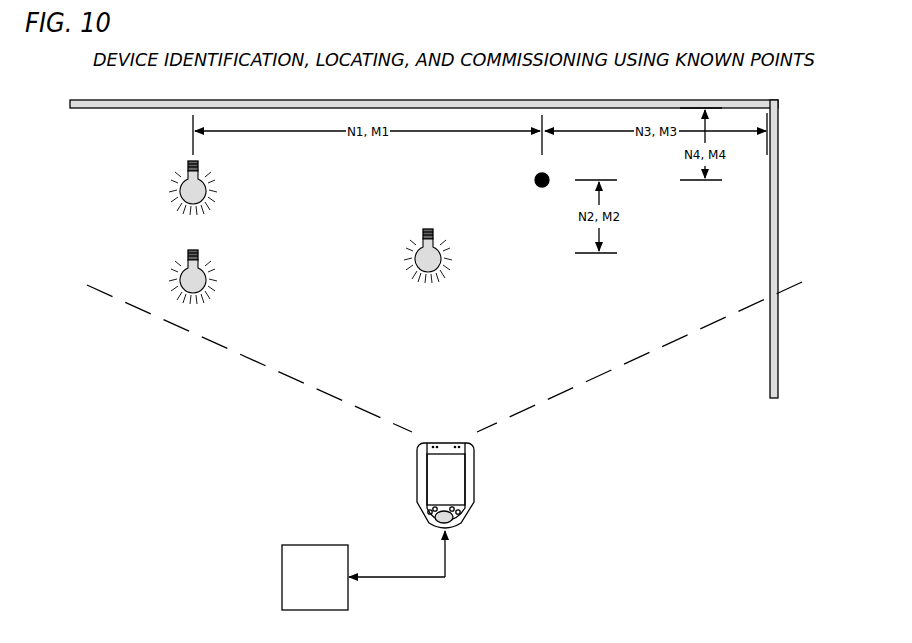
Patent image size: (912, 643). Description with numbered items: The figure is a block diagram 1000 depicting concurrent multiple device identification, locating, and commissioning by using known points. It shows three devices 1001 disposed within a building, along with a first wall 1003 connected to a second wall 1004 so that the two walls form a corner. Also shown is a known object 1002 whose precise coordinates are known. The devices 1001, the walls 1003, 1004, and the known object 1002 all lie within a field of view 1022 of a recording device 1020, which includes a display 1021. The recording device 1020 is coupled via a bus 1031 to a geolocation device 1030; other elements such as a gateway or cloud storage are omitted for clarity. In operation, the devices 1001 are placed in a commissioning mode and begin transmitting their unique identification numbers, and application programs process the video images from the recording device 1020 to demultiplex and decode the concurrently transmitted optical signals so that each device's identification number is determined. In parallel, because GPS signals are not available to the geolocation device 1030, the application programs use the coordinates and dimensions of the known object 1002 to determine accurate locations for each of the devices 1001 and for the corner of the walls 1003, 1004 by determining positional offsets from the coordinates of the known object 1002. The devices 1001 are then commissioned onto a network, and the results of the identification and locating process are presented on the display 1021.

The block diagram 1000 is at (804, 112).
The devices 1001 is at (212, 187).
The known object 1002 is at (549, 177).
The first wall 1003 is at (138, 108).
The second wall 1004 is at (770, 252).
The recording device 1020 is at (447, 485).
The display 1021 is at (438, 467).
The field of view 1022 is at (444, 357).
The geolocation device 1030 is at (316, 545).
The bus 1031 is at (445, 562).